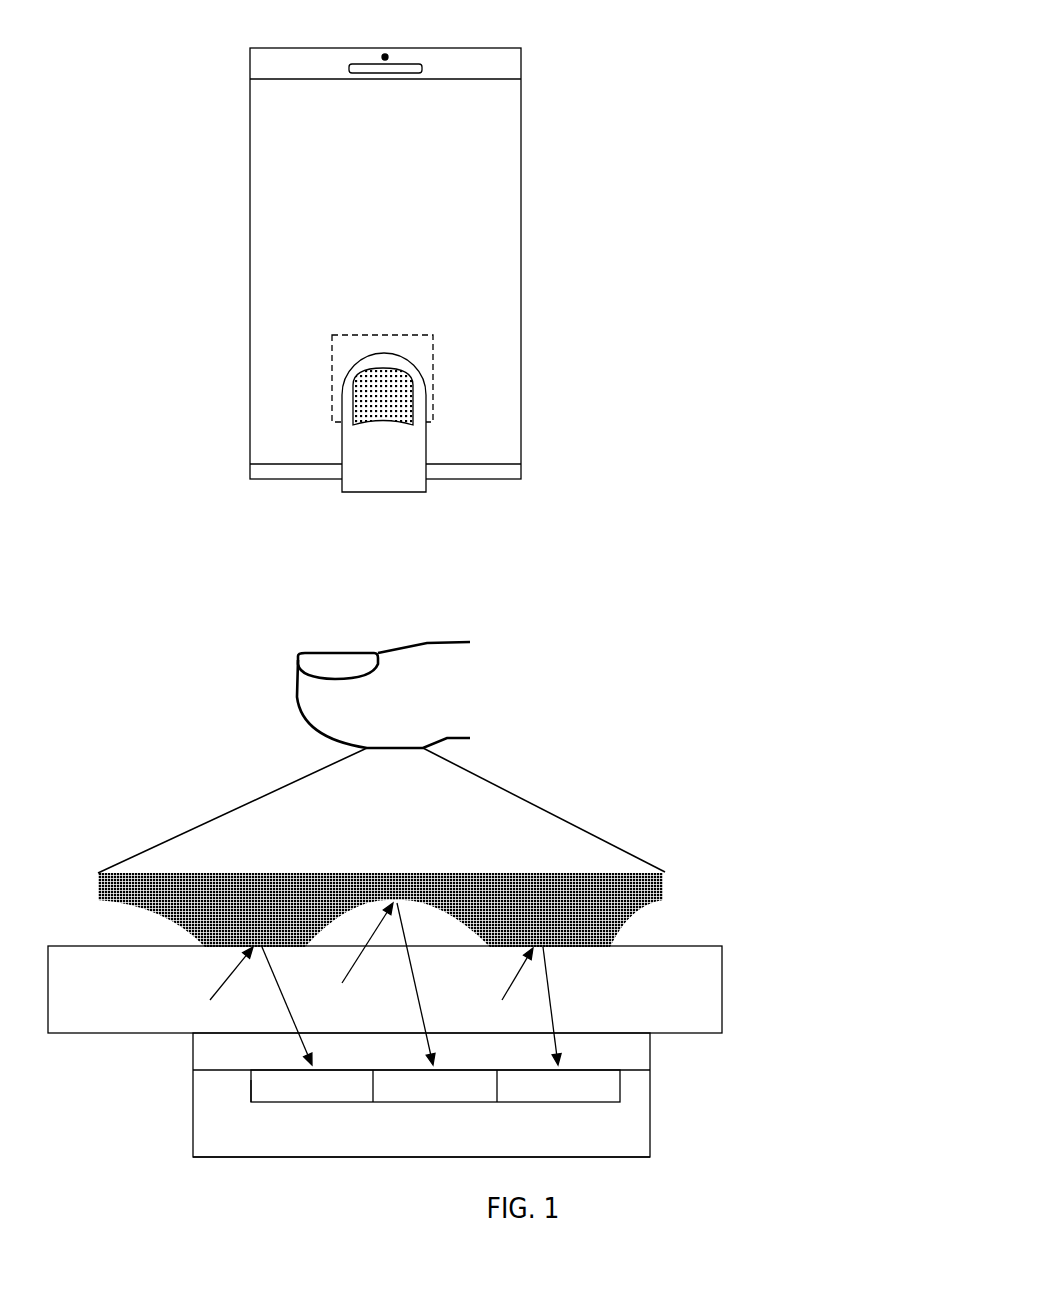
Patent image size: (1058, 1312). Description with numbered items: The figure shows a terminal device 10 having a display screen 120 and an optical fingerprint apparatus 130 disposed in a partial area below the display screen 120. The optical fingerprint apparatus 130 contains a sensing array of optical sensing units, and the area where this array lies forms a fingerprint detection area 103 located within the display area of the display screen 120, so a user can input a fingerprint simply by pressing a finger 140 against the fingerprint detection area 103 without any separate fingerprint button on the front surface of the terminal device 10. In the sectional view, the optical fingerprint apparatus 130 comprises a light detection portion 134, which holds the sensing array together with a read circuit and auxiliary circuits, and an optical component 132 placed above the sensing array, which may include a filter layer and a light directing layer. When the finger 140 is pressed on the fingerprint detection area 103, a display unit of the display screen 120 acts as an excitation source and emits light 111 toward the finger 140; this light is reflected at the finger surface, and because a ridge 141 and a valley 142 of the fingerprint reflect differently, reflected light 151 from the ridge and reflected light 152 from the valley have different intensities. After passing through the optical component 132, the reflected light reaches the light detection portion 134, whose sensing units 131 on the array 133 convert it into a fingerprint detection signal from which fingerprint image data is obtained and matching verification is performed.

The terminal device 10 is at (201, 27).
The display screen 120 is at (520, 270).
The fingerprint detection area 103 is at (433, 378).
The finger 140 is at (387, 478).
The fingerprint valley 142 is at (380, 895).
The fingerprint ridge 141 is at (407, 927).
The light 111 is at (347, 960).
The reflected light from the ridge 151 is at (431, 1006).
The reflected light from the valley 152 is at (427, 984).
The optical fingerprint apparatus 130 is at (830, 1020).
The optical component 132 is at (650, 1050).
The photosensitive unit 131 is at (435, 1086).
The photosensitive array 133 is at (252, 1080).
The light detection portion 134 is at (650, 1115).